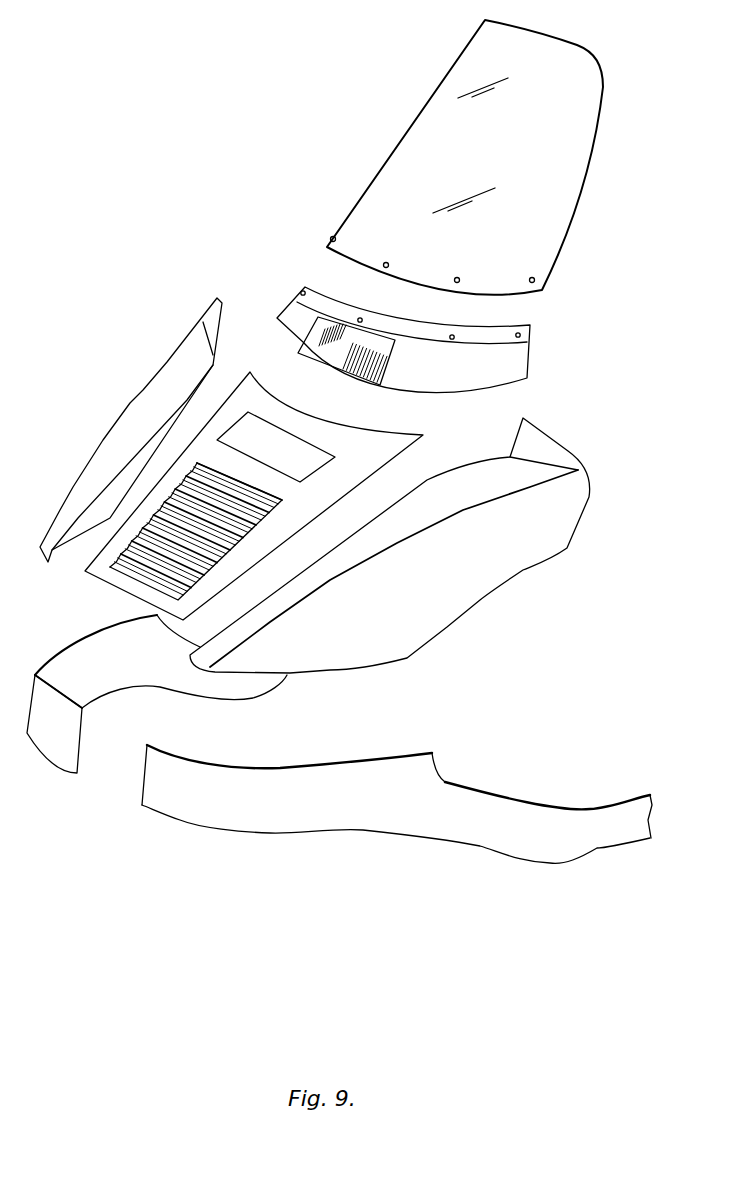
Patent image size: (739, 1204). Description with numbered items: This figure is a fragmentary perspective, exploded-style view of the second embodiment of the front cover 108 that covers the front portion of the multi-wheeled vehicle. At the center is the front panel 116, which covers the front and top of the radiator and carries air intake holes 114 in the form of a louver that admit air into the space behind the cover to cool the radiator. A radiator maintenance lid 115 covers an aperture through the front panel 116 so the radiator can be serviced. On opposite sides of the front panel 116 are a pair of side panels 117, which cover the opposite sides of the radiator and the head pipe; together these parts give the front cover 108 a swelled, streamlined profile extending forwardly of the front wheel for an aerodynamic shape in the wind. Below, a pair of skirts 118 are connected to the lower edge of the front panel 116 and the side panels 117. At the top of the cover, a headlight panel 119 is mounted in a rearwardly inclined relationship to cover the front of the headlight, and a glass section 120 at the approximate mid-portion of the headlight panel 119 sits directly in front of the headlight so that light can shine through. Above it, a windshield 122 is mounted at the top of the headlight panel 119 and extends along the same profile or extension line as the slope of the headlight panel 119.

The front cover 108 is at (607, 472).
The air intake holes 114 is at (223, 550).
The radiator maintenance lid 115 is at (312, 450).
The front panel 116 is at (365, 465).
The side panels 117 is at (135, 415).
The skirts 118 is at (118, 675).
The headlight panel 119 is at (521, 358).
The glass section 120 is at (335, 367).
The windshield 122 is at (392, 152).